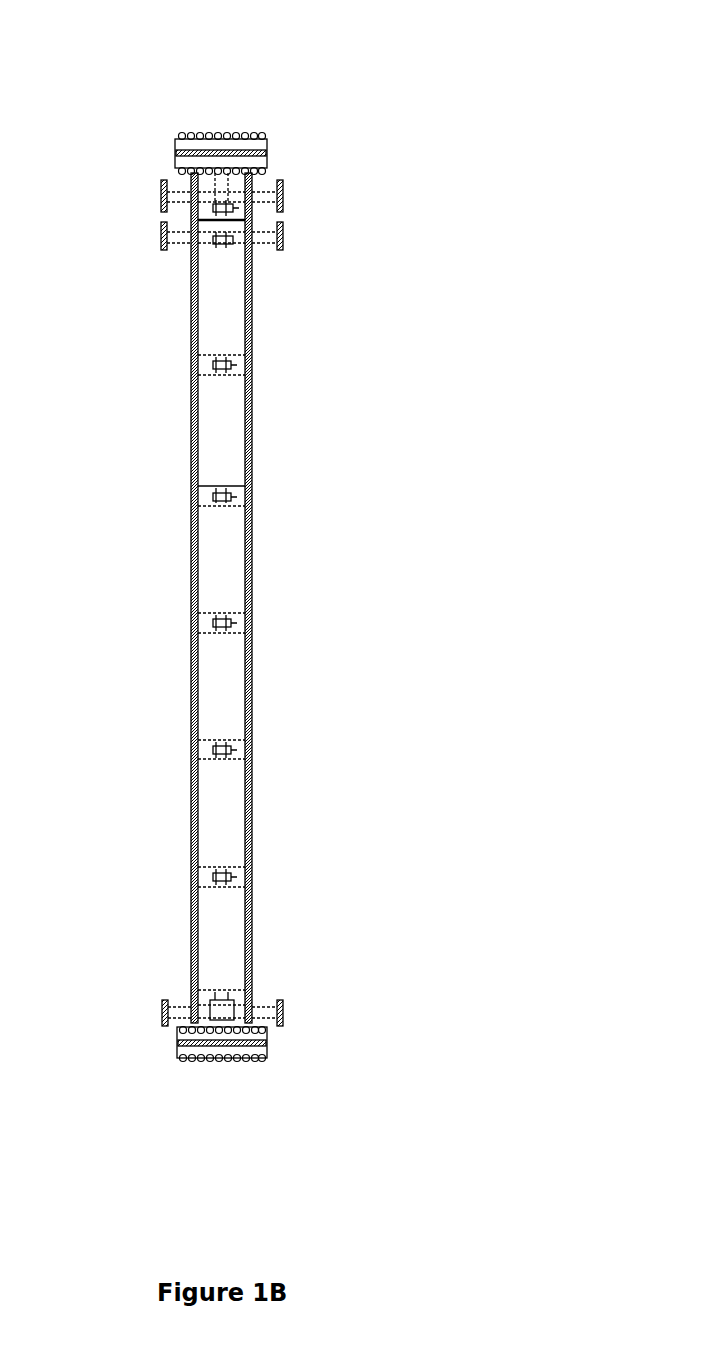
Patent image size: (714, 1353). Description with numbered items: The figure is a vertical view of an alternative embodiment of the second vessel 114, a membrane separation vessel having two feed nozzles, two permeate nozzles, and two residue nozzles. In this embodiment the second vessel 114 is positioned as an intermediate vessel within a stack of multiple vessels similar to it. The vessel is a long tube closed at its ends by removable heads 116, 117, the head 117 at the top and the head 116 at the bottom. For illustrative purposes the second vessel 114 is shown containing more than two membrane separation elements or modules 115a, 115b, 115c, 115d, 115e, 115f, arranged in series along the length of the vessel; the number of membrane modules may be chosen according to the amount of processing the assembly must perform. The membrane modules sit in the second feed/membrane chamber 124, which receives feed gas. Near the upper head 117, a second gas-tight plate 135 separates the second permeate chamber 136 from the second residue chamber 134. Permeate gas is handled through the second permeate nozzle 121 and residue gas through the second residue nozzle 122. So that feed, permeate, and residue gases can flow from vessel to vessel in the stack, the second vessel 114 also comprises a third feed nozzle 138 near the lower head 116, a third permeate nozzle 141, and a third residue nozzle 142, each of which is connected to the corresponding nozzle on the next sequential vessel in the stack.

The second vessel 114 is at (335, 33).
The removable head 117 is at (268, 148).
The second permeate nozzle 121 is at (283, 190).
The third permeate nozzle 141 is at (159, 195).
The second permeate chamber 136 is at (248, 212).
The second gas-tight plate 135 is at (196, 224).
The second residue nozzle 122 is at (283, 236).
The third residue nozzle 142 is at (159, 238).
The second residue chamber 134 is at (240, 246).
The membrane module 115f is at (243, 333).
The membrane module 115e is at (243, 392).
The membrane module 115d is at (243, 550).
The membrane module 115c is at (243, 668).
The membrane module 115b is at (243, 790).
The membrane module 115a is at (243, 912).
The second feed/membrane chamber 124 is at (238, 1010).
The third feed nozzle 138 is at (161, 1006).
The removable head 116 is at (262, 1048).